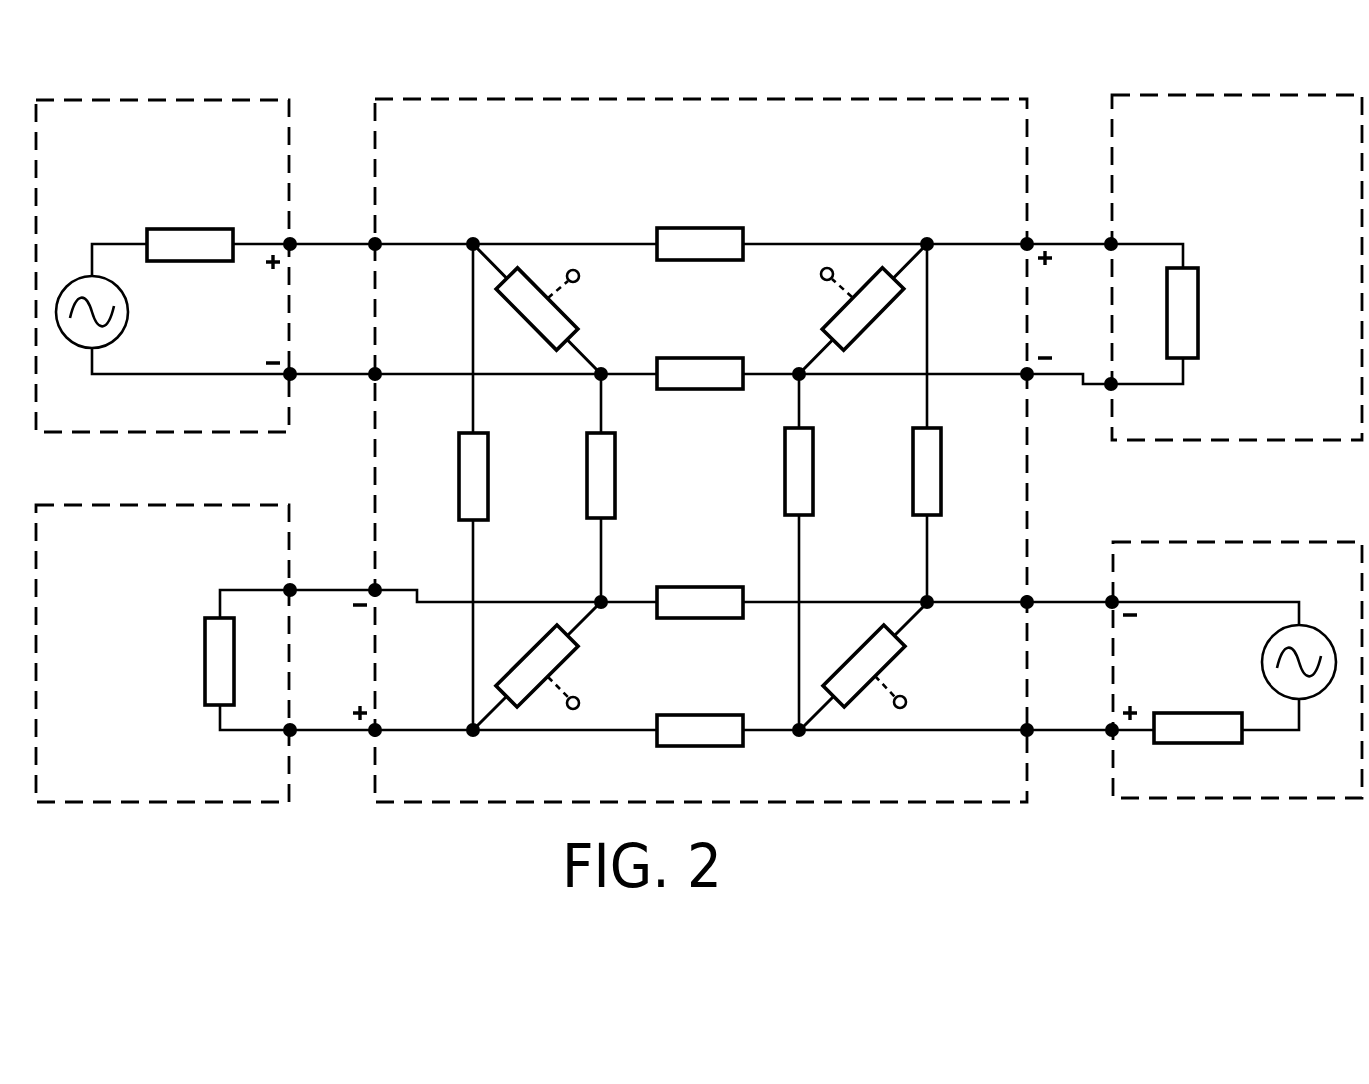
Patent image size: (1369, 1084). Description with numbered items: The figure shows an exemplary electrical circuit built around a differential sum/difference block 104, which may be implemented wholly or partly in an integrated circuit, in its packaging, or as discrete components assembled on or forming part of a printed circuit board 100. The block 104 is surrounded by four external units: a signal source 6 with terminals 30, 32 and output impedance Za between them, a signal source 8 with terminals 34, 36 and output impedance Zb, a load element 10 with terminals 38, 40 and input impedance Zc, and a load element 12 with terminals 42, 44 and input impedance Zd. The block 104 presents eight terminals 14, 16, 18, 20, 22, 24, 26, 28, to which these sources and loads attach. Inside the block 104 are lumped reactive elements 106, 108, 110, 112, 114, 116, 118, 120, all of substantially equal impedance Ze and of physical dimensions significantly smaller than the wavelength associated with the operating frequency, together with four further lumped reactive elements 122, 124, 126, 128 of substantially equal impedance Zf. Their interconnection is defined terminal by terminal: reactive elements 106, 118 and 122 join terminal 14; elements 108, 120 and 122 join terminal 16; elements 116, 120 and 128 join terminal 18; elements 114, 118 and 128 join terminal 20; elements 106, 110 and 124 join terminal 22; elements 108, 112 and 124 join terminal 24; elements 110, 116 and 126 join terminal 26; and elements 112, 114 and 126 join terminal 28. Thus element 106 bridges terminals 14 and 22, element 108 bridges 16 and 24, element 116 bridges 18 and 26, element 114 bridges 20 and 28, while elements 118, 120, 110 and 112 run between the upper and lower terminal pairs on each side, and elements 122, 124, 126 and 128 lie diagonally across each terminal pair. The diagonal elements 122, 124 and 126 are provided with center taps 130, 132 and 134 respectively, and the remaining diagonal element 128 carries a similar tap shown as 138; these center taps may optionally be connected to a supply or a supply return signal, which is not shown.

The printed circuit board 100 is at (940, 866).
The signal source 6 is at (262, 134).
The signal source 8 is at (1340, 576).
The load element 10 is at (263, 539).
The load element 12 is at (1340, 129).
The differential sum/difference block 104 is at (907, 134).
The terminal 14 is at (376, 236).
The terminal 16 is at (376, 366).
The terminal 18 is at (376, 582).
The terminal 20 is at (376, 722).
The terminal 22 is at (1024, 239).
The terminal 24 is at (1024, 370).
The terminal 26 is at (1024, 598).
The terminal 28 is at (1024, 726).
The terminal 30 is at (296, 248).
The terminal 32 is at (296, 372).
The terminal 34 is at (1110, 733).
The terminal 36 is at (1110, 598).
The terminal 38 is at (296, 733).
The terminal 40 is at (296, 588).
The terminal 42 is at (1108, 240).
The terminal 44 is at (1108, 388).
The lumped reactive element 106 is at (736, 226).
The lumped reactive element 108 is at (661, 389).
The lumped reactive element 110 is at (912, 508).
The lumped reactive element 112 is at (784, 455).
The lumped reactive element 114 is at (665, 746).
The lumped reactive element 116 is at (742, 586).
The lumped reactive element 118 is at (489, 445).
The lumped reactive element 120 is at (617, 503).
The lumped reactive element 122 is at (526, 318).
The lumped reactive element 124 is at (884, 307).
The lumped reactive element 126 is at (905, 648).
The lumped reactive element 128 is at (509, 674).
The center tap 130 is at (579, 279).
The center tap 132 is at (821, 279).
The center tap 134 is at (907, 707).
The adjustment tap 138 is at (581, 698).